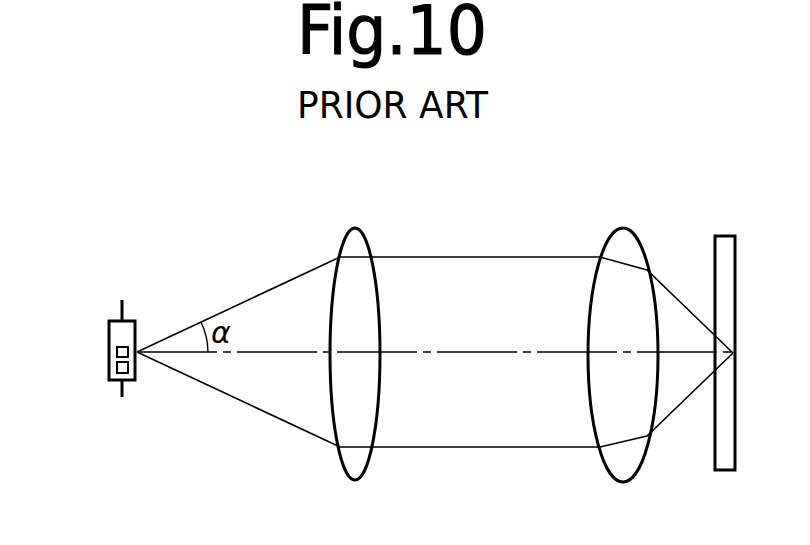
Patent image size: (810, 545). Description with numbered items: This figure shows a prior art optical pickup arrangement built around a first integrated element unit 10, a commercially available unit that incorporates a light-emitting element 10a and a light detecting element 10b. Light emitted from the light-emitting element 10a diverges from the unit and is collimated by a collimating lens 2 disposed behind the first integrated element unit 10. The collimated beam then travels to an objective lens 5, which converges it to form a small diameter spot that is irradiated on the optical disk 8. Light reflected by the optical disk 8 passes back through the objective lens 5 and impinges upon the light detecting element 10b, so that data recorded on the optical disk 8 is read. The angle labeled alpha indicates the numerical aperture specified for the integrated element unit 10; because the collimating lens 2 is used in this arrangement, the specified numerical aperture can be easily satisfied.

The collimating lens 2 is at (363, 242).
The objective lens 5 is at (627, 242).
The optical disk 8 is at (727, 253).
The first integrated element unit 10 is at (109, 321).
The light-emitting element 10a is at (117, 350).
The light detecting element 10b is at (109, 363).